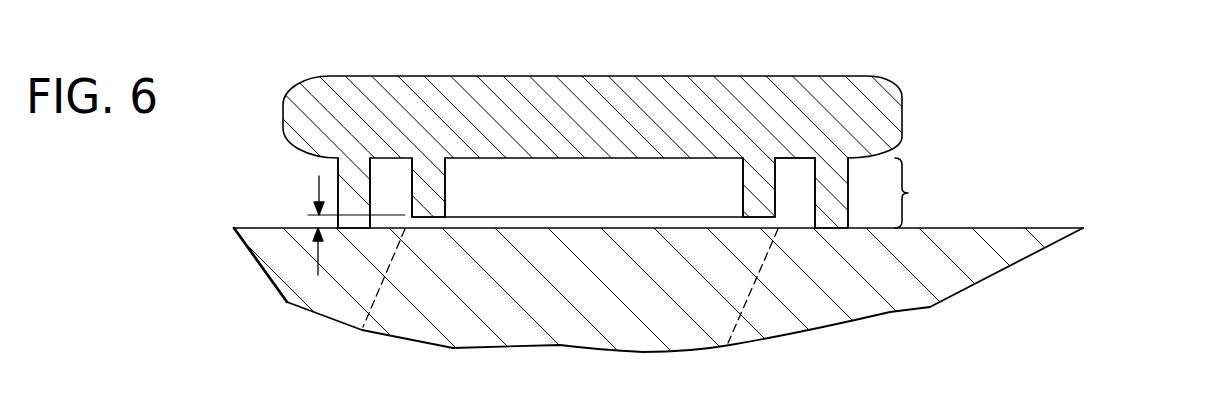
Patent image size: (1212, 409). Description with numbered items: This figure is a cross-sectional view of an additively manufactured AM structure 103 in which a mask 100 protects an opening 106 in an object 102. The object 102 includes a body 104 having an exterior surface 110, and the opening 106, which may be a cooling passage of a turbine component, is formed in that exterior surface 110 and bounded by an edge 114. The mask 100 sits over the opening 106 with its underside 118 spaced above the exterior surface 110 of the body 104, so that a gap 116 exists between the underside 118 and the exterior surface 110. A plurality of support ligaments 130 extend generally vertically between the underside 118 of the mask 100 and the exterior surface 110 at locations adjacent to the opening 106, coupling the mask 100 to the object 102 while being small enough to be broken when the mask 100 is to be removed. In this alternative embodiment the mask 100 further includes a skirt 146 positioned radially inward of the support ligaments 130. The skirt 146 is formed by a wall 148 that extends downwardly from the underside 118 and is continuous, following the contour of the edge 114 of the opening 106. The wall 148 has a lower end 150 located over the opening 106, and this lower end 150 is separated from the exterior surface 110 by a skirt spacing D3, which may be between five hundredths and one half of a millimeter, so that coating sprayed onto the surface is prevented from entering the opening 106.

The mask 100 is at (760, 90).
The object 102 is at (1012, 250).
The body 104 is at (665, 292).
The AM structure 103 is at (912, 80).
The opening 106 is at (675, 323).
The exterior surface 110 is at (995, 228).
The edge 114 is at (407, 229).
The gap 116 is at (927, 193).
The underside 118 is at (793, 158).
The support ligaments 130 is at (350, 172).
The skirt 146 is at (417, 191).
The wall 148 is at (527, 180).
The lower end 150 is at (757, 220).
The skirt spacing D3 is at (318, 176).